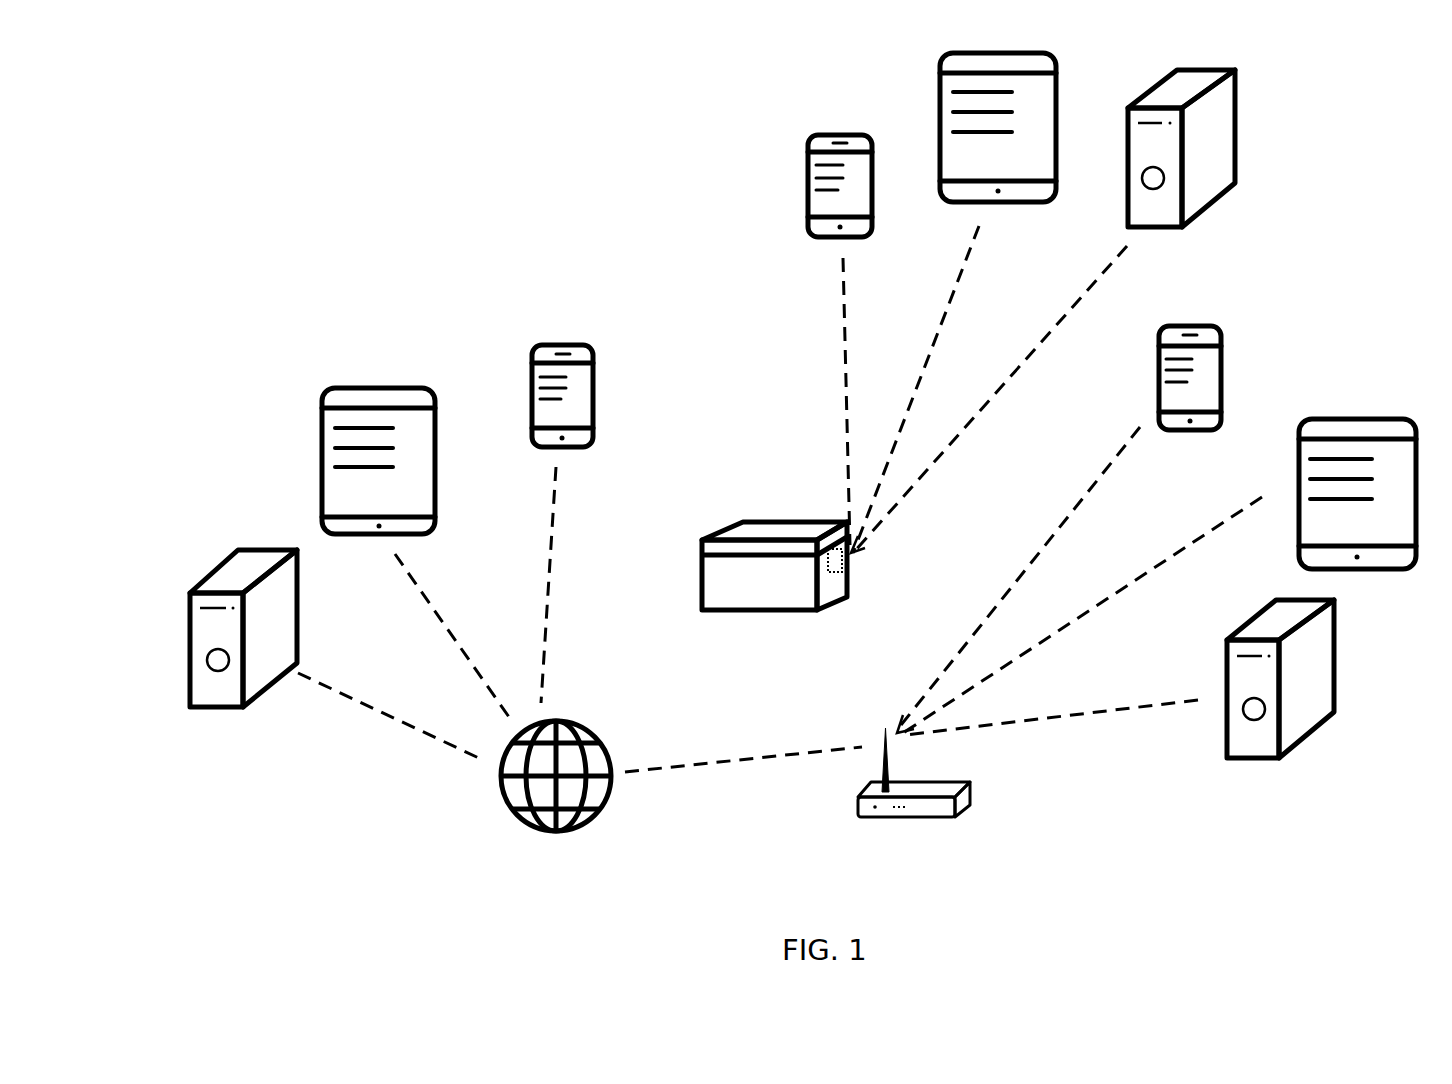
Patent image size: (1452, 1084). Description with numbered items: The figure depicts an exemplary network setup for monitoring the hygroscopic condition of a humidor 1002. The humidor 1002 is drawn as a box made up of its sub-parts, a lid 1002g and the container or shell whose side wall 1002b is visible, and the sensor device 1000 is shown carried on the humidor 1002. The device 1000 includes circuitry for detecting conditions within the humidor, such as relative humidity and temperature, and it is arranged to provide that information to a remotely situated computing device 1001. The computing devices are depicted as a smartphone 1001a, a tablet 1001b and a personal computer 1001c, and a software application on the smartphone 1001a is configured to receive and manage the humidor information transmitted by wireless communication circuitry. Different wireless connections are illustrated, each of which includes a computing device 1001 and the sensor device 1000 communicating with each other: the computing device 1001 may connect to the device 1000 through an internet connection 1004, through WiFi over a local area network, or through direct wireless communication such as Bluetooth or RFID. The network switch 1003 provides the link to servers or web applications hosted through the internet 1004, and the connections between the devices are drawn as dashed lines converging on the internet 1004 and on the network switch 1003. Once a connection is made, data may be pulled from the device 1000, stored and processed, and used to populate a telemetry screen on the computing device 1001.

The sensor device 1000 is at (850, 560).
The computing device 1001 is at (1021, 141).
The smartphone 1001a is at (534, 343).
The tablet 1001b is at (342, 390).
The personal computer 1001c is at (217, 572).
The humidor 1002 is at (797, 517).
The side wall 1002b is at (755, 588).
The lid 1002g is at (765, 532).
The network switch 1003 is at (967, 787).
The internet 1004 is at (500, 800).